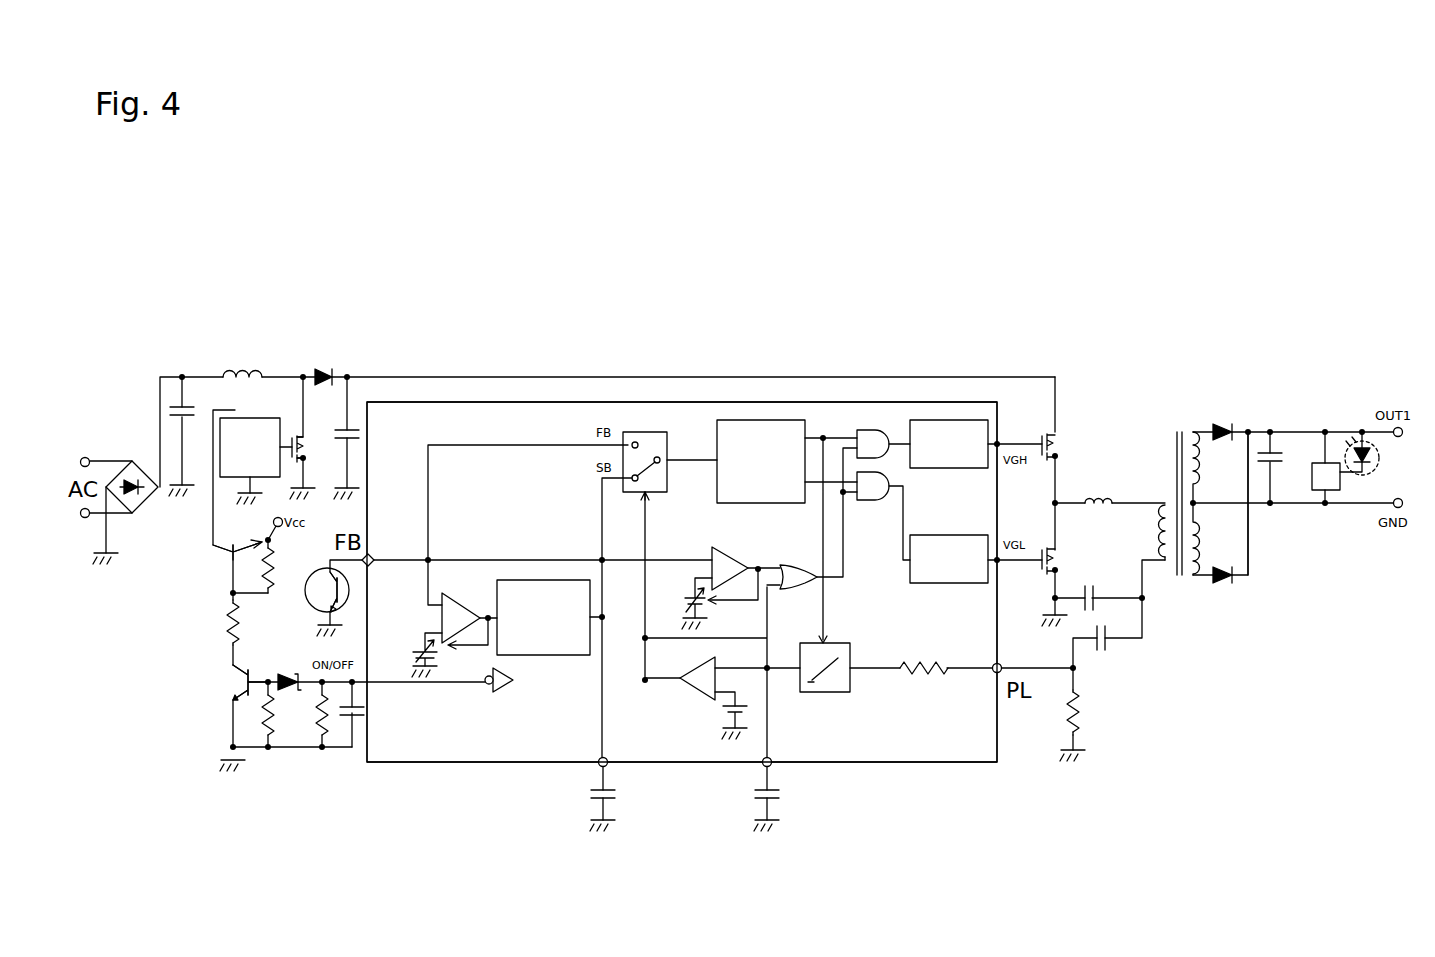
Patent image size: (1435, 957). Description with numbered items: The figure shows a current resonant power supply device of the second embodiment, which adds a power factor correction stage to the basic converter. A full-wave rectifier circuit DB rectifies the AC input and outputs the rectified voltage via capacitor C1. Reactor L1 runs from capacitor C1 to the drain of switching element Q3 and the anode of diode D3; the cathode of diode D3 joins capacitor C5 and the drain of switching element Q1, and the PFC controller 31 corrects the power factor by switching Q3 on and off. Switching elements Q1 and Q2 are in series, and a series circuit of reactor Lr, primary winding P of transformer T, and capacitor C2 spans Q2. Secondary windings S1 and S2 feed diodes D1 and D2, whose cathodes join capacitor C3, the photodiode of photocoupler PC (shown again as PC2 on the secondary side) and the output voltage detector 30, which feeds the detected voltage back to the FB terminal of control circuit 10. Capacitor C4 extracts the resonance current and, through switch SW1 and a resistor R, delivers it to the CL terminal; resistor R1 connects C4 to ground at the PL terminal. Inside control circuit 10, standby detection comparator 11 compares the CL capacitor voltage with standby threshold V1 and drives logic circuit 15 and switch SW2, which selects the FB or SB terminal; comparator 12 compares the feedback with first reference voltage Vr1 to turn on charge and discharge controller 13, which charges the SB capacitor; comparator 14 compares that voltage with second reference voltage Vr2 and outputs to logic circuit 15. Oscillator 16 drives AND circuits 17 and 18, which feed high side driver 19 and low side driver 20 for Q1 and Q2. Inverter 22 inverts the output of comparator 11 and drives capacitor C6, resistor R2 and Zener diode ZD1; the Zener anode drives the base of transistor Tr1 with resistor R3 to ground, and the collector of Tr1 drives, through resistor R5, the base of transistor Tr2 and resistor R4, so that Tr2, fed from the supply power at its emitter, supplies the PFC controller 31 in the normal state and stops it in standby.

The control circuit 10 is at (415, 762).
The standby detection comparator 11 is at (687, 698).
The comparator 12 is at (455, 593).
The charge and discharge controller 13 is at (555, 580).
The comparator 14 is at (732, 547).
The logic circuit 15 is at (795, 565).
The oscillator 16 is at (773, 420).
The AND circuit 17 is at (873, 430).
The AND circuit 18 is at (873, 500).
The high side driver 19 is at (930, 468).
The low side driver 20 is at (930, 583).
The inverter 22 is at (513, 690).
The output voltage detector 30 is at (1315, 490).
The PFC controller 31 is at (252, 418).
The full-wave rectifier circuit DB is at (127, 474).
The capacitor C1 is at (195, 407).
The reactor L1 is at (242, 357).
The switching element Q3 is at (317, 453).
The diode D3 is at (318, 368).
The capacitor C5 is at (360, 440).
The transistor Tr2 is at (228, 553).
The resistor R4 is at (284, 566).
The resistor R5 is at (214, 622).
The photocoupler PC is at (311, 596).
The transistor Tr1 is at (245, 678).
The Zener diode ZD1 is at (290, 672).
The resistor R3 is at (270, 752).
The resistor R2 is at (325, 752).
The capacitor C6 is at (367, 697).
The first reference voltage Vr1 is at (410, 642).
The second reference voltage Vr2 is at (684, 592).
The standby threshold V1 is at (718, 722).
The switch SW1 is at (815, 692).
The switch SW2 is at (642, 432).
The SB terminal SB is at (632, 788).
The CL terminal CL is at (798, 788).
The resistor R is at (924, 651).
The resistor R1 is at (1092, 712).
The capacitor C2 is at (1107, 590).
The capacitor C4 is at (1119, 647).
The first switching element Q1 is at (1067, 445).
The second switching element Q2 is at (1067, 557).
The reactor Lr is at (1098, 486).
The primary winding P is at (1148, 532).
The transformer T is at (1177, 486).
The secondary winding S1 is at (1212, 467).
The secondary winding S2 is at (1212, 539).
The diode D1 is at (1223, 419).
The diode D2 is at (1223, 589).
The capacitor C3 is at (1281, 473).
The photocoupler light emitting diode PC2 is at (1379, 456).